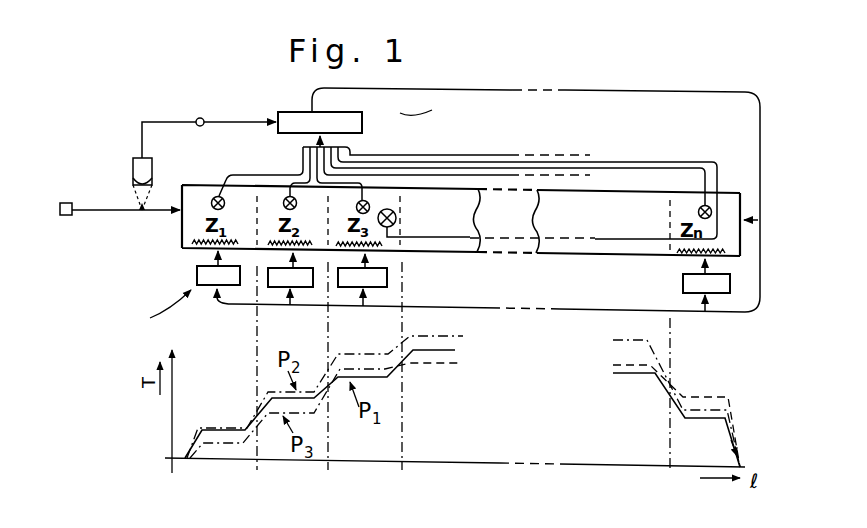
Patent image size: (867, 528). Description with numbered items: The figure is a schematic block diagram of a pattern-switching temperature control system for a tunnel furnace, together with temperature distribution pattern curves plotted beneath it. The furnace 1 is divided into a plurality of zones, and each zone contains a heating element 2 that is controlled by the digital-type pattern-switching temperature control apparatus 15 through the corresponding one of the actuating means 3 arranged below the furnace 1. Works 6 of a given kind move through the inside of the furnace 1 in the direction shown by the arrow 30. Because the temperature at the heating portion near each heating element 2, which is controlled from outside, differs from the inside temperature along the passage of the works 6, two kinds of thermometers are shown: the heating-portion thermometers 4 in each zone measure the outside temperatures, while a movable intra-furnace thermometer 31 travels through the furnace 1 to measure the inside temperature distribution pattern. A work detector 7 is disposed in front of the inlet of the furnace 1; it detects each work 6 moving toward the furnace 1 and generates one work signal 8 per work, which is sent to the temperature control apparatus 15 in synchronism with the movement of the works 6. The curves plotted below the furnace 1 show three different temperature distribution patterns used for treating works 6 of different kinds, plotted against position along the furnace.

The furnace 1 is at (734, 192).
The heating element 2 is at (193, 249).
The actuating means 3 is at (205, 285).
The heating-portion thermometer 4 is at (215, 197).
The work 6 is at (62, 216).
The work detector 7 is at (133, 167).
The work signal 8 is at (199, 118).
The pattern-switching temperature control apparatus 15 is at (362, 122).
The arrow 30 is at (115, 212).
The intra-furnace thermometer 31 is at (397, 218).